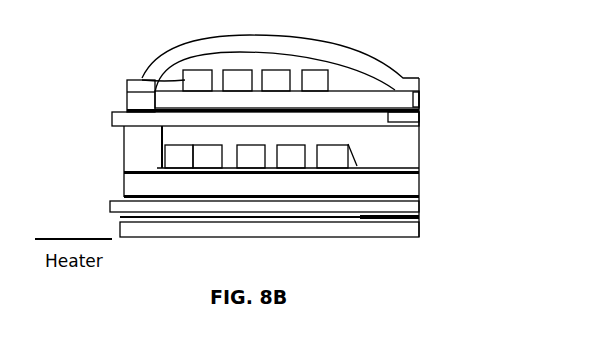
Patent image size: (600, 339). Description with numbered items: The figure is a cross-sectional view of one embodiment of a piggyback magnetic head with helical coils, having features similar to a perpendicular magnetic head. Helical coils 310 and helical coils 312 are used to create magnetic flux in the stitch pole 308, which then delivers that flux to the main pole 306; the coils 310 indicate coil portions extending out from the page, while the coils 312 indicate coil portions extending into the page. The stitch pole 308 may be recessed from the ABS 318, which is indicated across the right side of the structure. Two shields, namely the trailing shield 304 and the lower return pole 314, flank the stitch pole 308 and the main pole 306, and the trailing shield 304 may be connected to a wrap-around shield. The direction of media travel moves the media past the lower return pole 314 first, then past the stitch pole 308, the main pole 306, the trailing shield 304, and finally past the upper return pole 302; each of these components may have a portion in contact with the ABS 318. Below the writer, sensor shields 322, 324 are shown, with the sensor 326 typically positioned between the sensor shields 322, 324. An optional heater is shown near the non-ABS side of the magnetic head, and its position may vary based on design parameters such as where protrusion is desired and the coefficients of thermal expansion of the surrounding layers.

The upper return pole 302 is at (368, 60).
The trailing shield 304 is at (420, 102).
The main pole 306 is at (420, 119).
The stitch pole 308 is at (383, 127).
The helical coils 310 is at (142, 79).
The helical coils 312 is at (165, 145).
The lower return pole 314 is at (300, 192).
The ABS 318 is at (421, 174).
The sensor shield 322 is at (110, 203).
The sensor shield 324 is at (120, 228).
The sensor 326 is at (420, 211).